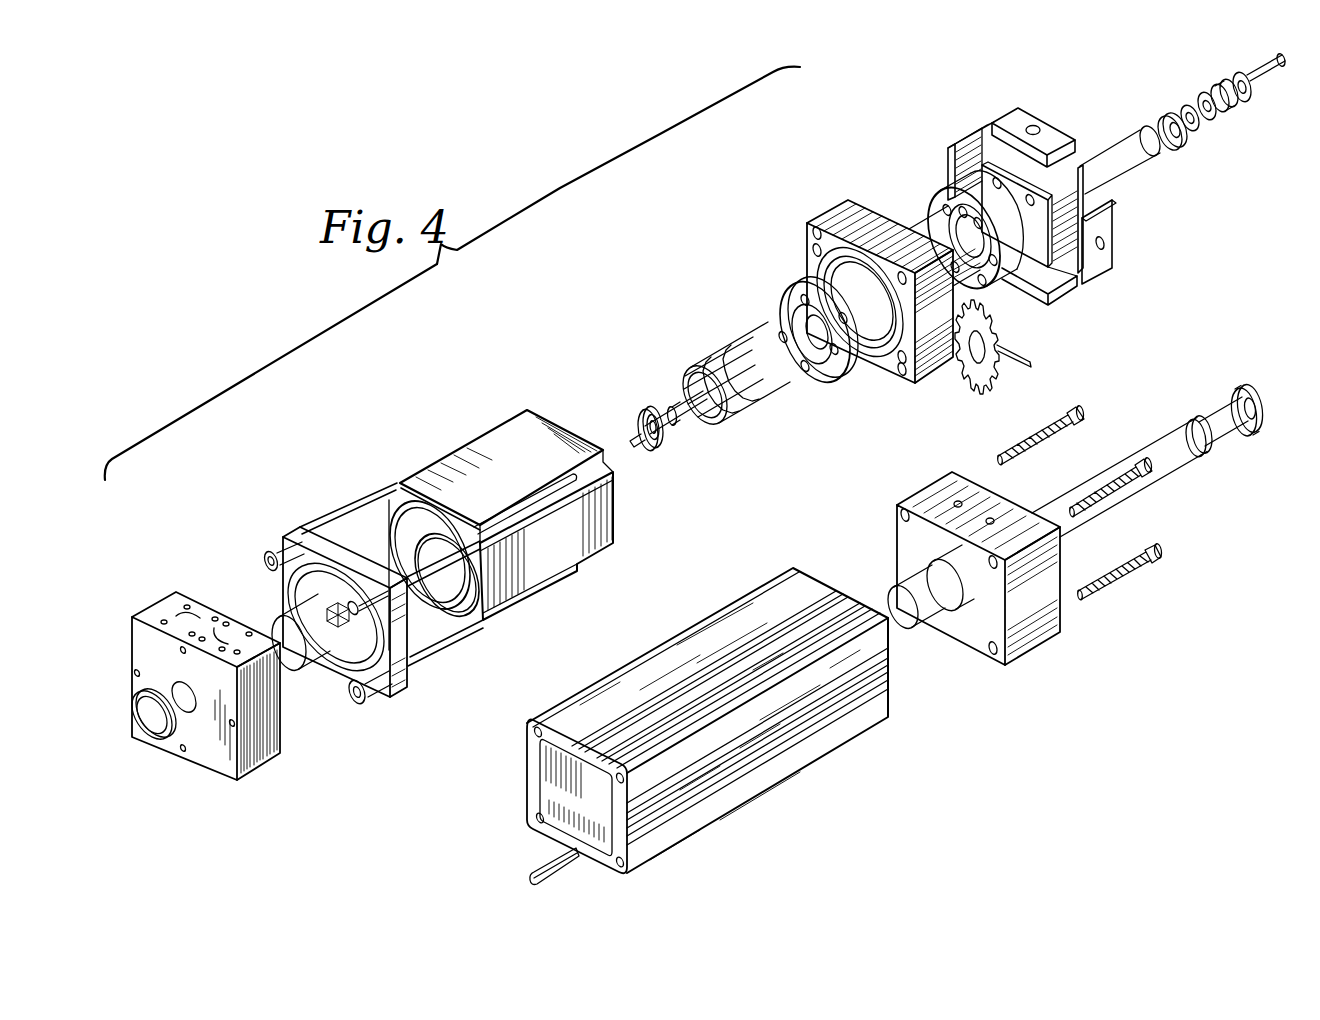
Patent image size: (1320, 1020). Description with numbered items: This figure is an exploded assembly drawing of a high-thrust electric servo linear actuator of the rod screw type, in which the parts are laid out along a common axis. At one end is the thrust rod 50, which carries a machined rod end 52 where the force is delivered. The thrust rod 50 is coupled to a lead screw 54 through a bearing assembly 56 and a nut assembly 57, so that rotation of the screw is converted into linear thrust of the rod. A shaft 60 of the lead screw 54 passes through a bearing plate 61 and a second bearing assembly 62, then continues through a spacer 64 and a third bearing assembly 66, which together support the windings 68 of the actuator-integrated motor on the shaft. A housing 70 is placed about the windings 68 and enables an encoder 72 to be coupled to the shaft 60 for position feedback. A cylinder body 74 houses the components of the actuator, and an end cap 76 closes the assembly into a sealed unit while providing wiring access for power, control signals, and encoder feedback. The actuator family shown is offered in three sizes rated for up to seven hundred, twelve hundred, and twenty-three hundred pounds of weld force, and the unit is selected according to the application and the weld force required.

The thrust rod 50 is at (1172, 438).
The machined rod end 52 is at (1213, 413).
The lead screw 54 is at (1247, 107).
The bearing assembly 56 is at (1037, 600).
The nut assembly 57 is at (947, 627).
The shaft 60 is at (1130, 170).
The bearing plate 61 is at (1018, 112).
The second bearing assembly 62 is at (947, 197).
The spacer 64 is at (827, 210).
The third bearing assembly 66 is at (833, 273).
The windings 68 is at (733, 337).
The housing 70 is at (496, 445).
The encoder 72 is at (284, 607).
The cylinder body 74 is at (740, 787).
The end cap 76 is at (211, 759).